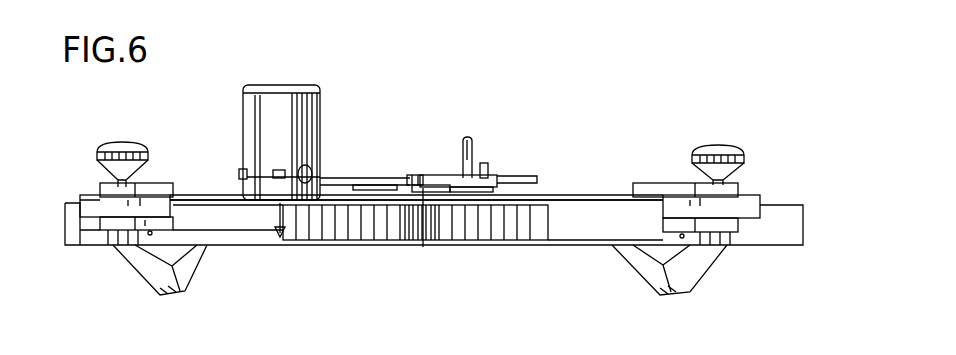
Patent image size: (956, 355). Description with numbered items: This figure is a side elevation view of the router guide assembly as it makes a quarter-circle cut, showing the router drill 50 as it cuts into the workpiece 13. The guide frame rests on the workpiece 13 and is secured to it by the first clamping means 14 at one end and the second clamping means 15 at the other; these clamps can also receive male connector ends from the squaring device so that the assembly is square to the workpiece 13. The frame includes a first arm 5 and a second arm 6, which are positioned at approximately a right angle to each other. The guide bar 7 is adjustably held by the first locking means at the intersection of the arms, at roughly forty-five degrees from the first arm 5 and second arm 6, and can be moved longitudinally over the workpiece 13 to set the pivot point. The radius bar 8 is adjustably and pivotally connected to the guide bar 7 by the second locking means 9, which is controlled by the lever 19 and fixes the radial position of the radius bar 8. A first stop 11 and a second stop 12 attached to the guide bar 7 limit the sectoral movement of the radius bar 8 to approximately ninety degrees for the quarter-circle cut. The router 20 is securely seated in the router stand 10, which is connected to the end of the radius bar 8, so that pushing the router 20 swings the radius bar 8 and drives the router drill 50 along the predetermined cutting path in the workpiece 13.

The first arm 5 is at (598, 193).
The second arm 6 is at (215, 205).
The guide bar 7 is at (430, 182).
The radius bar 8 is at (360, 178).
The second locking means 9 is at (455, 177).
The router stand 10 is at (240, 185).
The first stop 11 is at (503, 180).
The second stop 12 is at (380, 185).
The workpiece 13 is at (607, 236).
The first clamping means 14 is at (93, 198).
The second clamping means 15 is at (745, 200).
The lever 19 is at (473, 152).
The router 20 is at (318, 88).
The router drill 50 is at (277, 218).